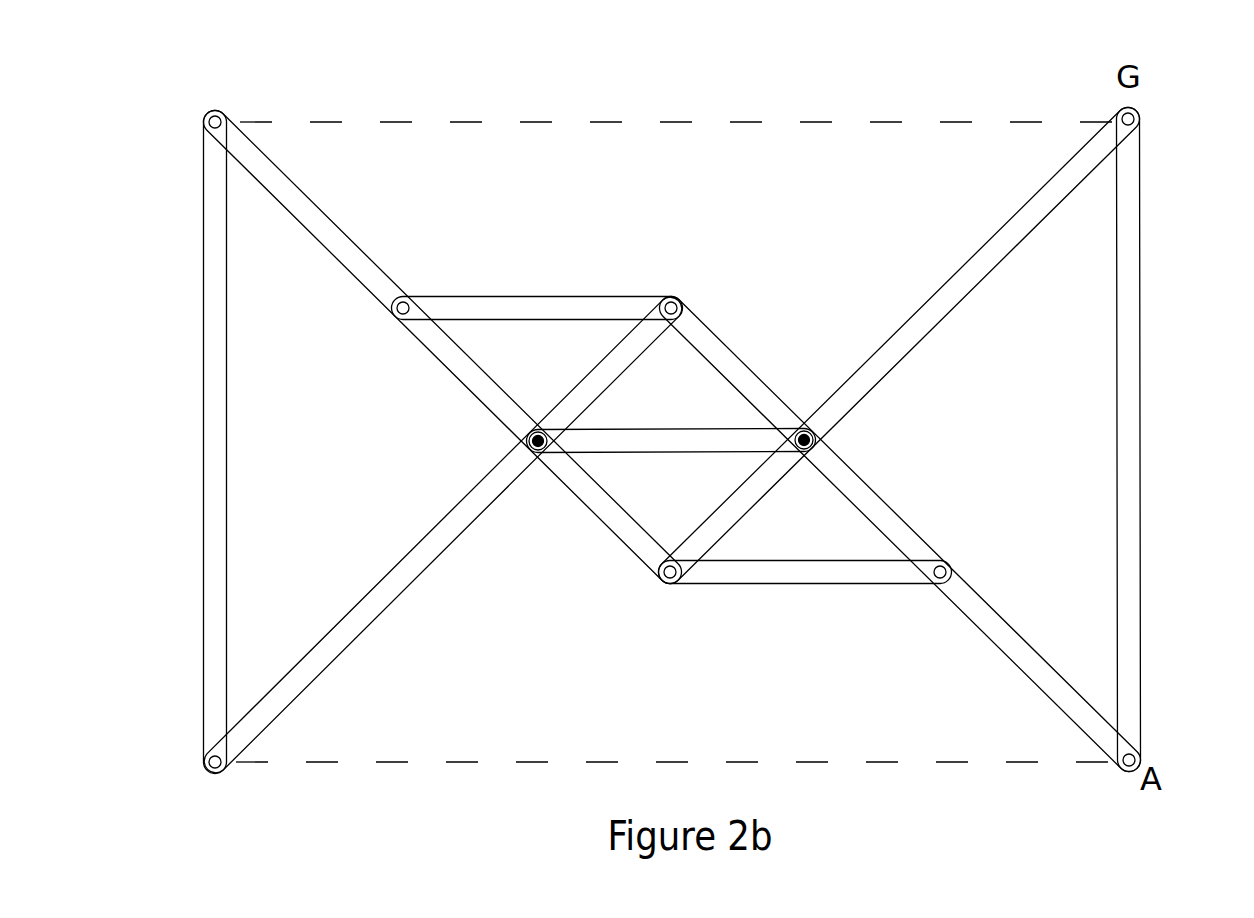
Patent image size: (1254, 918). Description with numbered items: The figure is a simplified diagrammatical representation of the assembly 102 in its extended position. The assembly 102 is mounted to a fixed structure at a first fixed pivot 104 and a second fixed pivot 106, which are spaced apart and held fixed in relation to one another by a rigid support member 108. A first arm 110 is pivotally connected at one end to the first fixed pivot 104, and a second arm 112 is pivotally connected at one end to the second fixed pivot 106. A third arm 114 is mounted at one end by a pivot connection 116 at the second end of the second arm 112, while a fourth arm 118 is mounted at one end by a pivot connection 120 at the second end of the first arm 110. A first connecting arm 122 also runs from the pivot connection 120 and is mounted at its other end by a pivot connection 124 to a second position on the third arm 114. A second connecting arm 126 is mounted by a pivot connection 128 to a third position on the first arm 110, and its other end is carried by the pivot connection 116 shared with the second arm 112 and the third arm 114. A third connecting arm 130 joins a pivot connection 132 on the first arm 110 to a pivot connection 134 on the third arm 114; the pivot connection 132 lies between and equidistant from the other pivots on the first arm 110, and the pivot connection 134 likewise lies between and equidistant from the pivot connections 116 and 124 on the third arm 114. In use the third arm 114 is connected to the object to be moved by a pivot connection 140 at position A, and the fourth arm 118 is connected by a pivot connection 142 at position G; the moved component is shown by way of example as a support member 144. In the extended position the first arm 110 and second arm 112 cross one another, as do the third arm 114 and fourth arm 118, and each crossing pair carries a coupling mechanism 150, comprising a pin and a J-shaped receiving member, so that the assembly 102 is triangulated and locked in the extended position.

The assembly 102 is at (621, 88).
The first fixed pivot 104 is at (222, 115).
The second fixed pivot 106 is at (205, 764).
The support member 108 is at (205, 345).
The first arm 110 is at (306, 208).
The second arm 112 is at (398, 582).
The third arm 114 is at (993, 626).
The pivot connection 116 is at (678, 300).
The fourth arm 118 is at (1028, 220).
The pivot connection 120 is at (660, 582).
The first connecting arm 122 is at (810, 585).
The pivot connection 124 is at (950, 566).
The second connecting arm 126 is at (530, 296).
The pivot connection 128 is at (396, 318).
The third connecting arm 130 is at (672, 443).
The pivot connection 132 is at (533, 465).
The pivot connection 134 is at (805, 428).
The pivot connection 140 is at (1140, 752).
The pivot connection 142 is at (1142, 117).
The support member 144 is at (1140, 328).
The coupling mechanism 150 is at (512, 449).